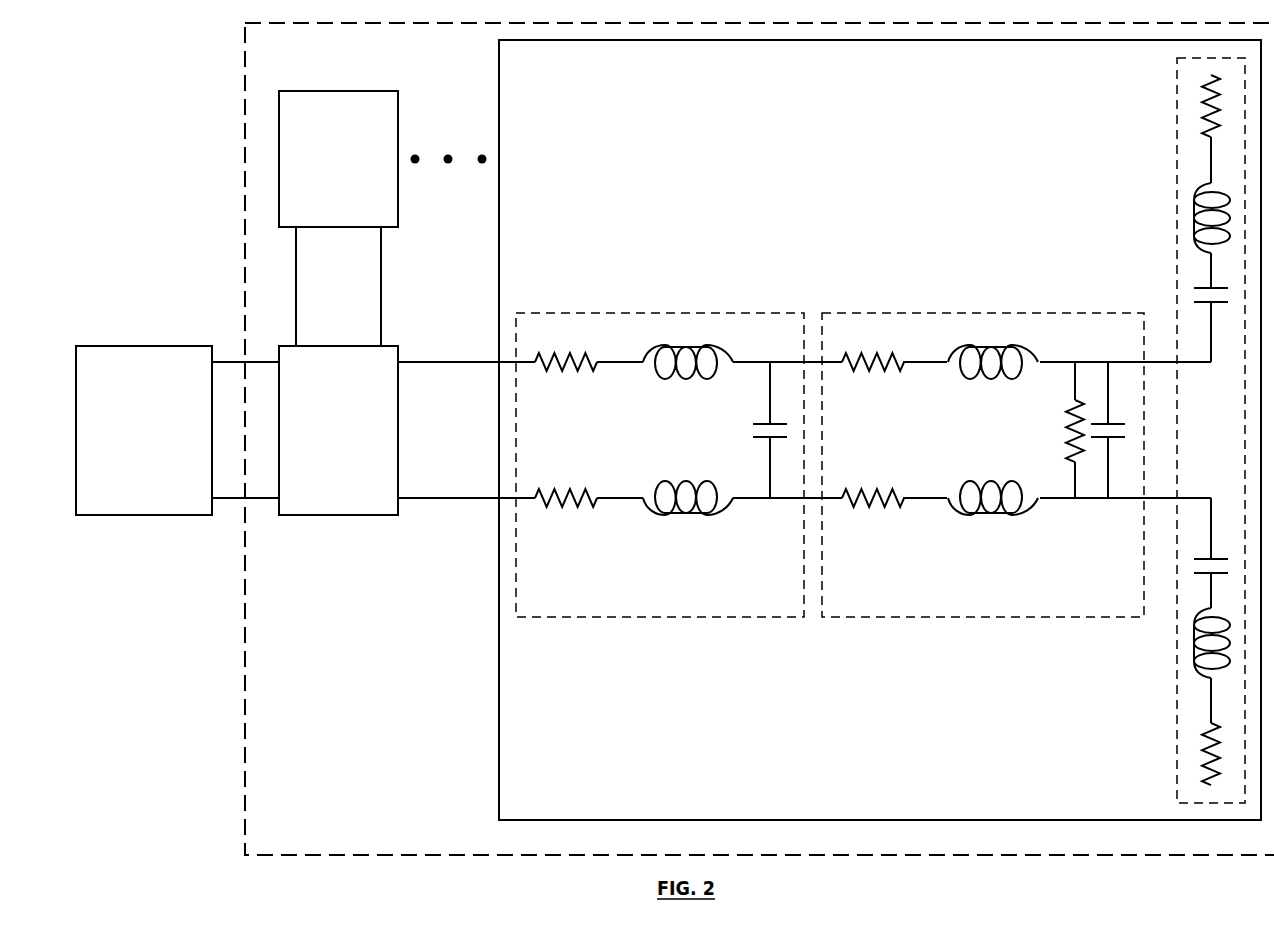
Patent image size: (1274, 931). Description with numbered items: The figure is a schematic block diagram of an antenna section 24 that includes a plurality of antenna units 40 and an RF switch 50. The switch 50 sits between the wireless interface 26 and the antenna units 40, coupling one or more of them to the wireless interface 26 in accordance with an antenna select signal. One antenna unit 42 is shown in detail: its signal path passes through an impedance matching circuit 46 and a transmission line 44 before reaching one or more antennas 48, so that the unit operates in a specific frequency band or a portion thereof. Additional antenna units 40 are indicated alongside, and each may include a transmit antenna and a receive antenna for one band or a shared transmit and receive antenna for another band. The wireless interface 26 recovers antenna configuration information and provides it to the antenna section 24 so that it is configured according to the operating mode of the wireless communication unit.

The antenna section 24 is at (408, 843).
The wireless interface 26 is at (192, 452).
The antenna unit 40 is at (328, 182).
The antenna unit 42 is at (943, 810).
The transmission line 44 is at (1063, 605).
The impedance matching circuit 46 is at (697, 606).
The antenna 48 is at (1120, 85).
The RF switch 50 is at (377, 439).